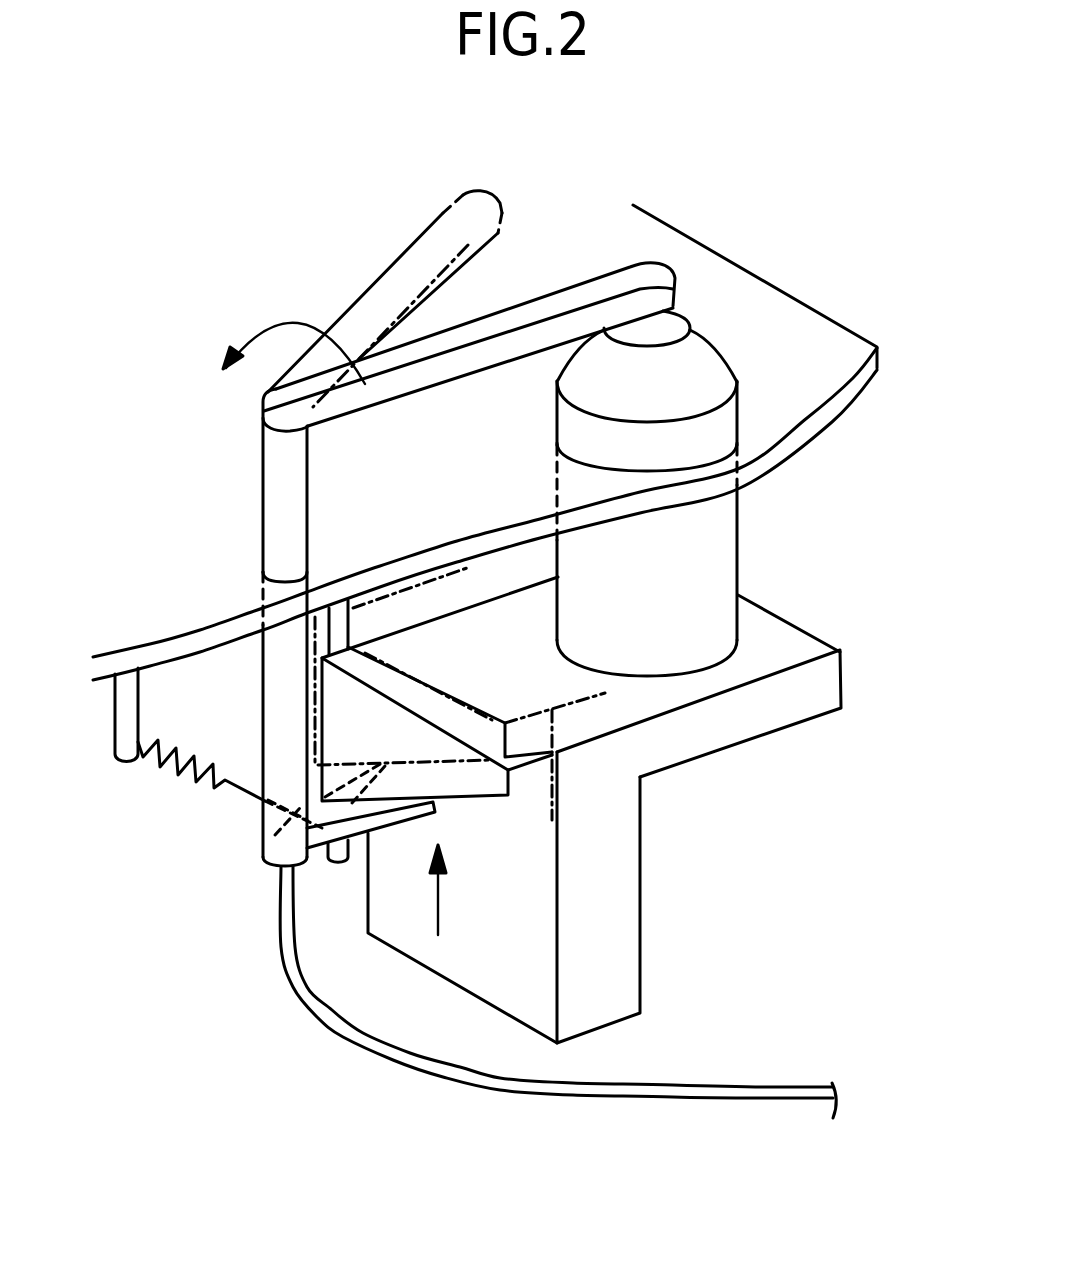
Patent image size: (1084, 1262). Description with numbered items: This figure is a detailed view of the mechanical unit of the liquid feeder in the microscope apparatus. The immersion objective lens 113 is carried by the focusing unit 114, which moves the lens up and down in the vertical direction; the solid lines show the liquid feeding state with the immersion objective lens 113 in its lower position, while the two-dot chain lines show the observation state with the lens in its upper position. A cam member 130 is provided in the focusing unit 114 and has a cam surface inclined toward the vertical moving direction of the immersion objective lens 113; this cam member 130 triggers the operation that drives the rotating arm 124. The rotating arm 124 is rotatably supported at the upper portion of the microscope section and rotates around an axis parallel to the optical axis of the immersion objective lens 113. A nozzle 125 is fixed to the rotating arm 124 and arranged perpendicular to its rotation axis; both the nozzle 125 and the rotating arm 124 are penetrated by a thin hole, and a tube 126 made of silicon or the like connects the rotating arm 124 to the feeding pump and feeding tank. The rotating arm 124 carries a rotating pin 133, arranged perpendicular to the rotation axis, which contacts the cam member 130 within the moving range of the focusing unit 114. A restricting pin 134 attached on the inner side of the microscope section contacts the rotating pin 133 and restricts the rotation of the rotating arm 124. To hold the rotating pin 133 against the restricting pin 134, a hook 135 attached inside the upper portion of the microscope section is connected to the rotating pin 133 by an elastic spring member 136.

The immersion objective lens 113 is at (713, 372).
The focusing unit 114 is at (833, 687).
The rotating arm 124 is at (277, 500).
The nozzle 125 is at (595, 293).
The tube 126 is at (732, 1084).
The cam member 130 is at (537, 773).
The rotating pin 133 is at (378, 817).
The restricting pin 134 is at (327, 858).
The hook 135 is at (115, 702).
The elastic spring member 136 is at (156, 767).